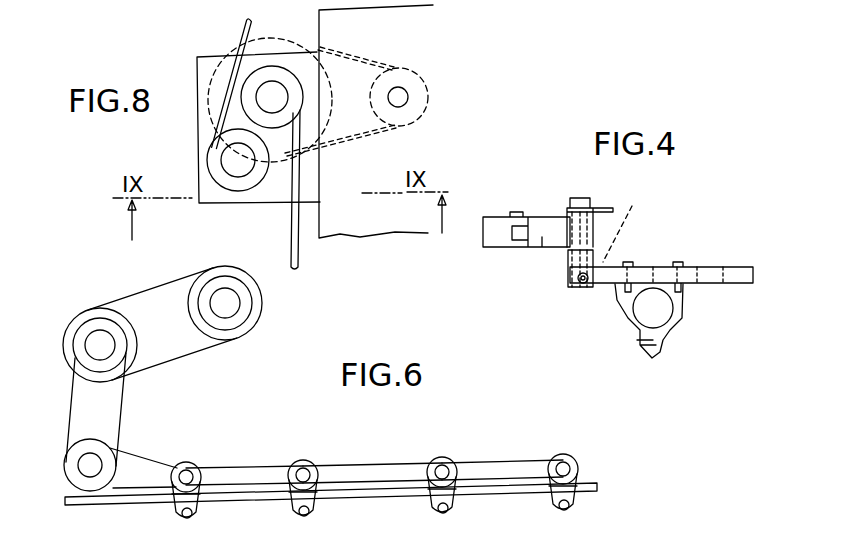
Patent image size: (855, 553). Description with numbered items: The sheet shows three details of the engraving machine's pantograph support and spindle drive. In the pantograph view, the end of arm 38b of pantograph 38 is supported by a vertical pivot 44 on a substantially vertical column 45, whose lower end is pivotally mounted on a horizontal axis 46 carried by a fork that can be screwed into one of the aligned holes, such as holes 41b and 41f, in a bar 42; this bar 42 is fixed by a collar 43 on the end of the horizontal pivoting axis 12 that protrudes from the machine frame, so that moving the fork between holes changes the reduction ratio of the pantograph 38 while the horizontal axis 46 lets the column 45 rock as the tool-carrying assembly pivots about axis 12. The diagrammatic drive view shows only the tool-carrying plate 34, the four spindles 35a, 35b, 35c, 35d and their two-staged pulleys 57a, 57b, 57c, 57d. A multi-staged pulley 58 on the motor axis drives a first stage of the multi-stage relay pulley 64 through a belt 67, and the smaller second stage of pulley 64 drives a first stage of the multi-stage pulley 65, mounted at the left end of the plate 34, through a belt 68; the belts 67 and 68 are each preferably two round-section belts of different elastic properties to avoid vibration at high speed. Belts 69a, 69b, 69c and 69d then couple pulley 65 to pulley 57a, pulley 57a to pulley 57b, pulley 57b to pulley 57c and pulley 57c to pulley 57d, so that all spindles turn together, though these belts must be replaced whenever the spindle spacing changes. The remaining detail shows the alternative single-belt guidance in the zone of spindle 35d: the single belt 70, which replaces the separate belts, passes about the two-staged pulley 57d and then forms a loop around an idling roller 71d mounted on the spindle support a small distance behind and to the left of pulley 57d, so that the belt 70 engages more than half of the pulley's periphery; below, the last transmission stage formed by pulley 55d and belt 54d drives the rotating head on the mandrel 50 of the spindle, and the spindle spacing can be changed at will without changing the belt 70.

In FIG. 4, the axis 12 is at (660, 312).
In FIG. 6, the tool-carrying plate 34 is at (413, 497).
In FIG. 6, the spindle 35a is at (194, 513).
In FIG. 6, the spindle 35b is at (310, 510).
In FIG. 6, the spindle 35c is at (448, 506).
In FIG. 6, the spindle 35d is at (570, 506).
In FIG. 4, the pantograph 38 is at (508, 216).
In FIG. 4, the arm of pantograph 38b is at (563, 251).
In FIG. 4, the hole 41b is at (597, 238).
In FIG. 4, the hole 41f is at (727, 262).
In FIG. 4, the bar 42 is at (741, 284).
In FIG. 4, the collar 43 is at (638, 327).
In FIG. 4, the vertical pivot 44 is at (630, 224).
In FIG. 4, the column 45 is at (575, 264).
In FIG. 4, the axis 46 is at (584, 285).
In FIG. 8, the mandrel 50 is at (428, 97).
In FIG. 8, the belt 54d is at (358, 57).
In FIG. 8, the pulley 55d is at (247, 44).
In FIG. 6, the two-staged pulley 57a is at (187, 470).
In FIG. 6, the two-staged pulley 57b is at (304, 470).
In FIG. 6, the two-staged pulley 57c is at (443, 467).
In FIG. 8, the two-staged pulley 57d is at (273, 73).
In FIG. 6, the two-staged pulley 57d is at (564, 464).
In FIG. 6, the multi-staged pulley 58 is at (236, 303).
In FIG. 6, the multi-stage relay pulley 64 is at (98, 344).
In FIG. 6, the multi-stage pulley 65 is at (80, 465).
In FIG. 6, the belt 67 is at (142, 291).
In FIG. 6, the belt 68 is at (70, 408).
In FIG. 6, the belt 69a is at (158, 461).
In FIG. 6, the belt 69b is at (260, 467).
In FIG. 6, the belt 69c is at (385, 465).
In FIG. 6, the belt 69d is at (522, 462).
In FIG. 8, the single belt 70 is at (290, 234).
In FIG. 8, the idling roller 71d is at (212, 143).